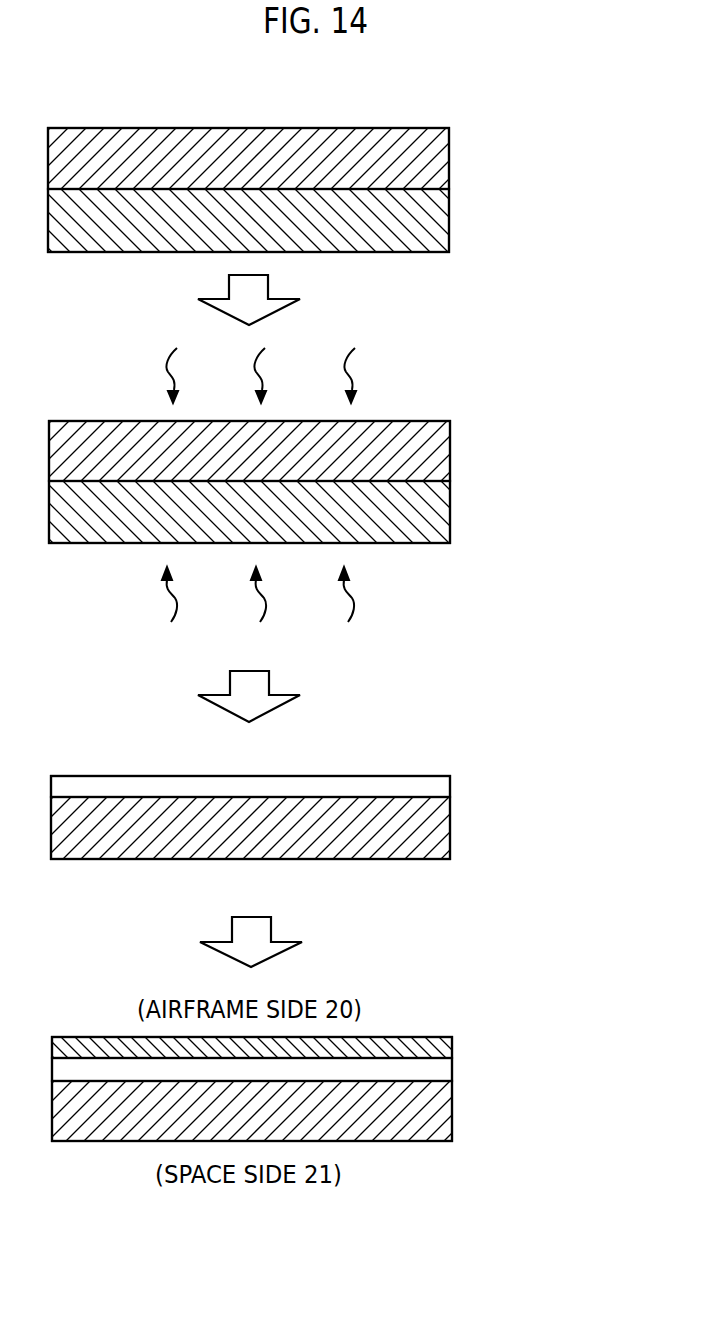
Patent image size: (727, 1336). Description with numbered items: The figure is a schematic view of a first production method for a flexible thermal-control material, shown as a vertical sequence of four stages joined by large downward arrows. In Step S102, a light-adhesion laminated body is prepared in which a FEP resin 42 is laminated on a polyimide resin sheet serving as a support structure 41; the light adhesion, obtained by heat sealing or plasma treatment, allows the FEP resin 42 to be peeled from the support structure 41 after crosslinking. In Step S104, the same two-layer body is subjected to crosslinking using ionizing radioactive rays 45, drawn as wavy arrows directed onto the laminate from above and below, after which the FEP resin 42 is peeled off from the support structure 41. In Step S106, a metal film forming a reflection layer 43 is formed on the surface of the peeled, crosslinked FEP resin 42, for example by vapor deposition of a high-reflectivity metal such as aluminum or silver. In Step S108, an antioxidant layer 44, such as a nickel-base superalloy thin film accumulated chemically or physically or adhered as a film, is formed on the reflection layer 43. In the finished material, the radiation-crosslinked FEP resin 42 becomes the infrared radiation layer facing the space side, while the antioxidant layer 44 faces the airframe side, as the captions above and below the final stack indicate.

The support structure 41 is at (449, 221).
The FEP resin 42 is at (449, 161).
The reflection layer 43 is at (450, 790).
The antioxidant layer 44 is at (452, 1044).
The ionizing radioactive rays 45 is at (352, 357).
The step of preparing light-adhesion laminated body S102 is at (530, 113).
The crosslinking step S104 is at (339, 460).
The reflection layer forming step S106 is at (340, 789).
The antioxidant layer forming step S108 is at (341, 1074).